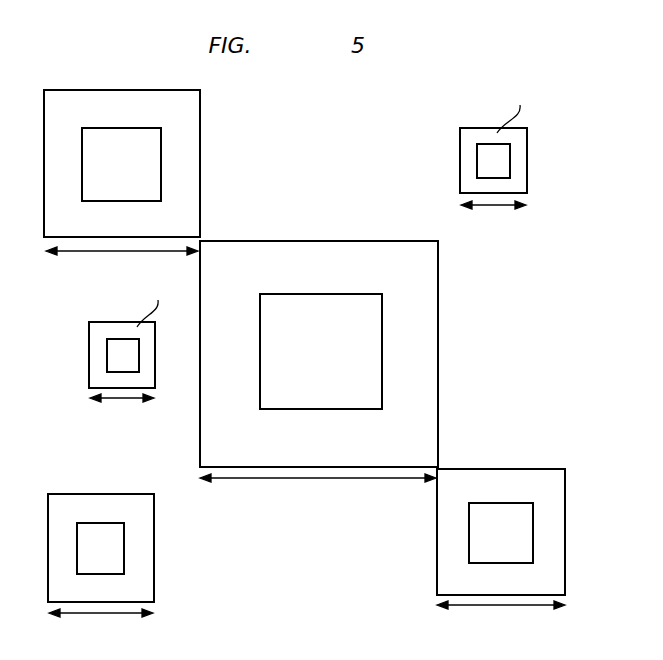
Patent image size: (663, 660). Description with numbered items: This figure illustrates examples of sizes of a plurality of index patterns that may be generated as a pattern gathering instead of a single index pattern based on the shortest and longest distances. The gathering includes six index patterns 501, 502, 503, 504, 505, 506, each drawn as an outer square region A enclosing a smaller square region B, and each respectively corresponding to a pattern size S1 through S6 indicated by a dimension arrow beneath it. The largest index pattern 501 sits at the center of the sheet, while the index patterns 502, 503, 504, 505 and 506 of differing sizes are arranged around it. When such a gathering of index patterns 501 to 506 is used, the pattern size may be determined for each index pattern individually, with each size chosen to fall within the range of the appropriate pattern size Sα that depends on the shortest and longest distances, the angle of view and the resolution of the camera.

The index pattern 501 is at (374, 241).
The index pattern 502 is at (533, 530).
The index pattern 503 is at (124, 545).
The index pattern 504 is at (201, 157).
The index pattern 505 is at (106, 357).
The index pattern 506 is at (511, 157).